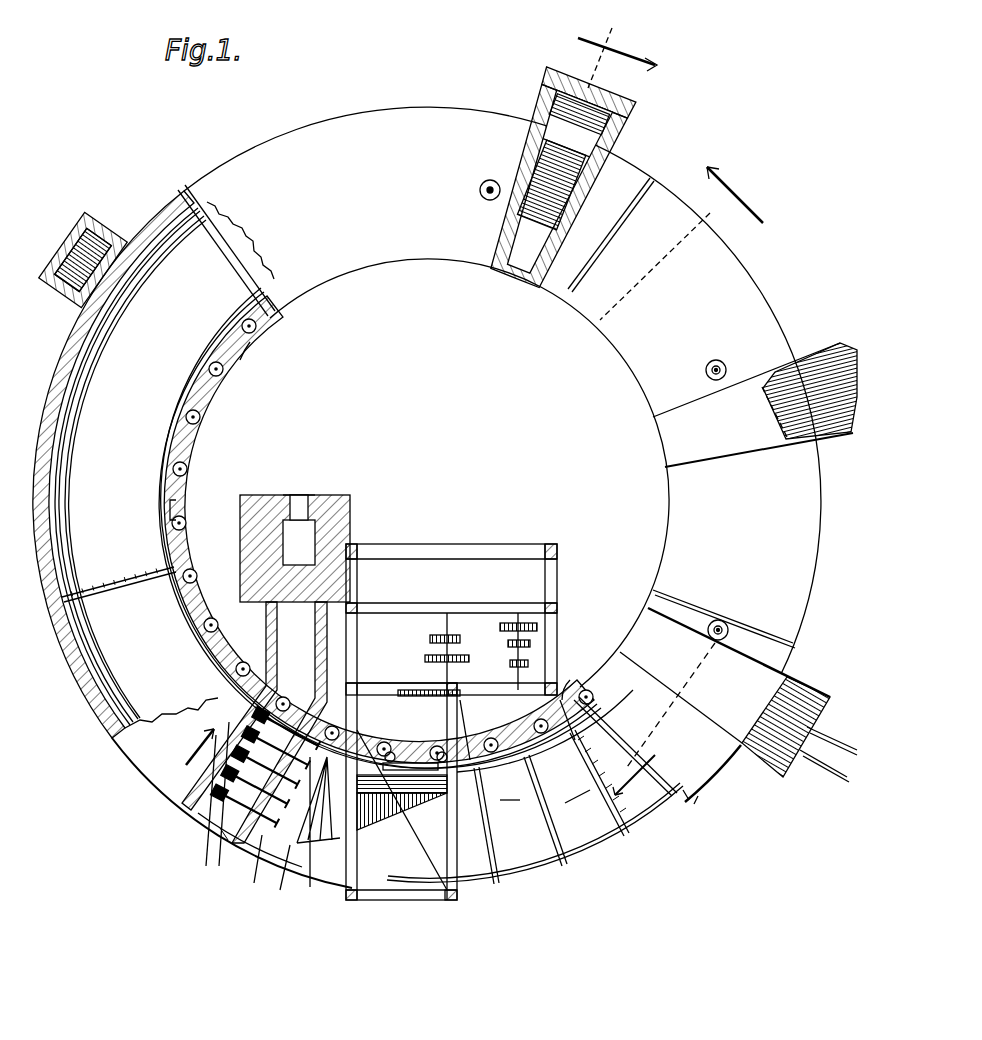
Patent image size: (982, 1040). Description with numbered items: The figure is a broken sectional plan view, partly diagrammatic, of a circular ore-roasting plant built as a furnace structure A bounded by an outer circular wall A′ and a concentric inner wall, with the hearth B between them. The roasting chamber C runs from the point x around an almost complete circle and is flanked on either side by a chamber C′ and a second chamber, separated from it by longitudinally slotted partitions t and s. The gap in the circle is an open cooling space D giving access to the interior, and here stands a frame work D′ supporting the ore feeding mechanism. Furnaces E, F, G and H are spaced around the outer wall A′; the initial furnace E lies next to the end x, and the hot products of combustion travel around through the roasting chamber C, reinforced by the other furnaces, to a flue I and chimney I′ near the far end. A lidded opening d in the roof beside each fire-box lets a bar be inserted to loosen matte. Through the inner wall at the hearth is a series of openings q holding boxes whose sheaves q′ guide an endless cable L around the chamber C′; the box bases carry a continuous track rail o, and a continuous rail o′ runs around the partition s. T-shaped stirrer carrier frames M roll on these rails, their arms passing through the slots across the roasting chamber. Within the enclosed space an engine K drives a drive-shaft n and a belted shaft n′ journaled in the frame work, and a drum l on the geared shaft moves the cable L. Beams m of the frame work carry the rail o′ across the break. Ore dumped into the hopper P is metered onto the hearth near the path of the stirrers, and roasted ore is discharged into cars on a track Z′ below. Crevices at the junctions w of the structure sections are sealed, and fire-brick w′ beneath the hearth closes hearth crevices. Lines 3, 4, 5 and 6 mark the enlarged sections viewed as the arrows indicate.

The furnace structure A is at (469, 473).
The outer circular wall A′ is at (183, 205).
The hearth B is at (427, 497).
The roasting chamber C is at (113, 670).
The chamber C′ is at (185, 563).
The cooling space D is at (535, 801).
The frame work D′ is at (517, 729).
The furnace E is at (800, 688).
The furnace F is at (818, 340).
The furnace G is at (632, 108).
The furnace H is at (75, 231).
The flue I is at (266, 669).
The chimney I′ is at (322, 495).
The engine K is at (451, 619).
The endless cable L is at (188, 500).
The stirrer carrier frames M is at (585, 755).
The hopper P is at (401, 791).
The track Z′ is at (838, 778).
The opening d is at (480, 188).
The drum l is at (428, 760).
The beams m is at (545, 803).
The drive-shaft n is at (508, 660).
The shaft n′ is at (450, 627).
The track rail o is at (172, 436).
The rail o′ is at (67, 413).
The openings q is at (190, 468).
The guide-wheel q′ is at (222, 373).
The partition s is at (163, 466).
The partition t is at (70, 456).
The junctions w is at (610, 238).
The fire-brick w′ is at (222, 262).
The end of roasting chamber x is at (454, 838).
The section line 3 is at (199, 739).
The section line 4 is at (634, 775).
The section line 5 is at (617, 47).
The section line 6 is at (681, 242).